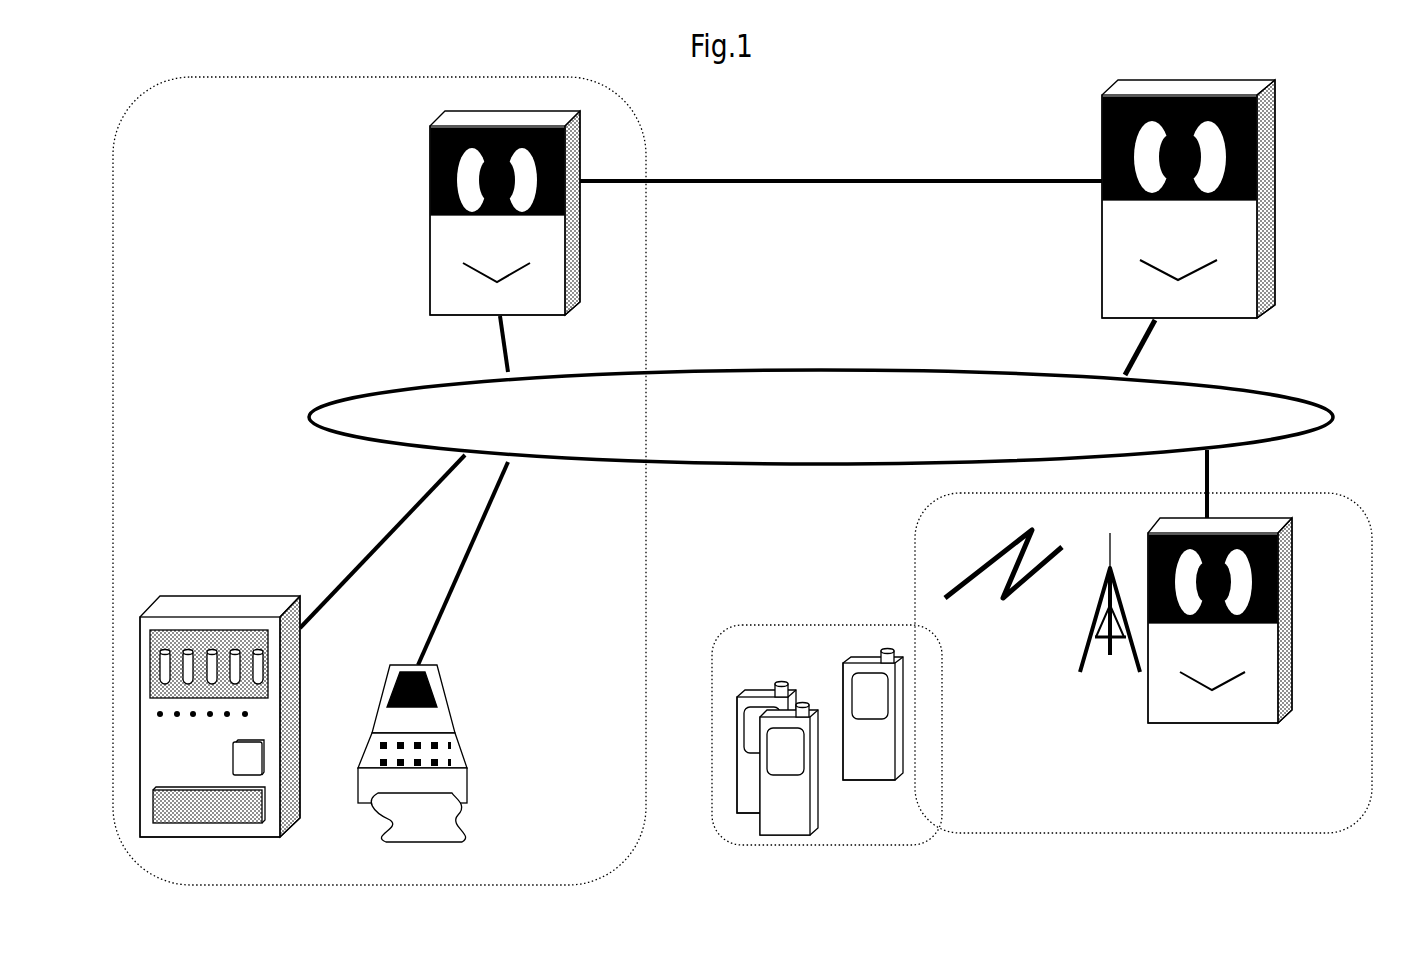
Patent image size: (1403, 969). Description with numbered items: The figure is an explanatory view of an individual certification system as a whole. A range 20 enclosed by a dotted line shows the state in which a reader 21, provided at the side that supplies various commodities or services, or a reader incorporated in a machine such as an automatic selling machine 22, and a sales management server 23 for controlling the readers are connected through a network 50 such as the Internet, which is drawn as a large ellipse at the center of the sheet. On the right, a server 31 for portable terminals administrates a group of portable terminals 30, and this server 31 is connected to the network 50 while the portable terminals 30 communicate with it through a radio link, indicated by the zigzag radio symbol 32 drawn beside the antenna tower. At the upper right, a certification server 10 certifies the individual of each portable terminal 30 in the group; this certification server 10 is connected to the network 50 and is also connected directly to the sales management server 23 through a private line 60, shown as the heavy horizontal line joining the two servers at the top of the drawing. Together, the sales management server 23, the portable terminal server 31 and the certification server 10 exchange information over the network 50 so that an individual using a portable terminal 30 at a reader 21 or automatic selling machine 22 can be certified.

The certification server 10 is at (1243, 250).
The range 20 is at (617, 291).
The reader 21 is at (437, 721).
The automatic selling machine 22 is at (230, 604).
The sales management server 23 is at (445, 250).
The portable terminals 30 is at (805, 645).
The server for portable terminals 31 is at (1230, 710).
The radio communication 32 is at (987, 562).
The network 50 is at (1235, 385).
The private line 60 is at (710, 178).